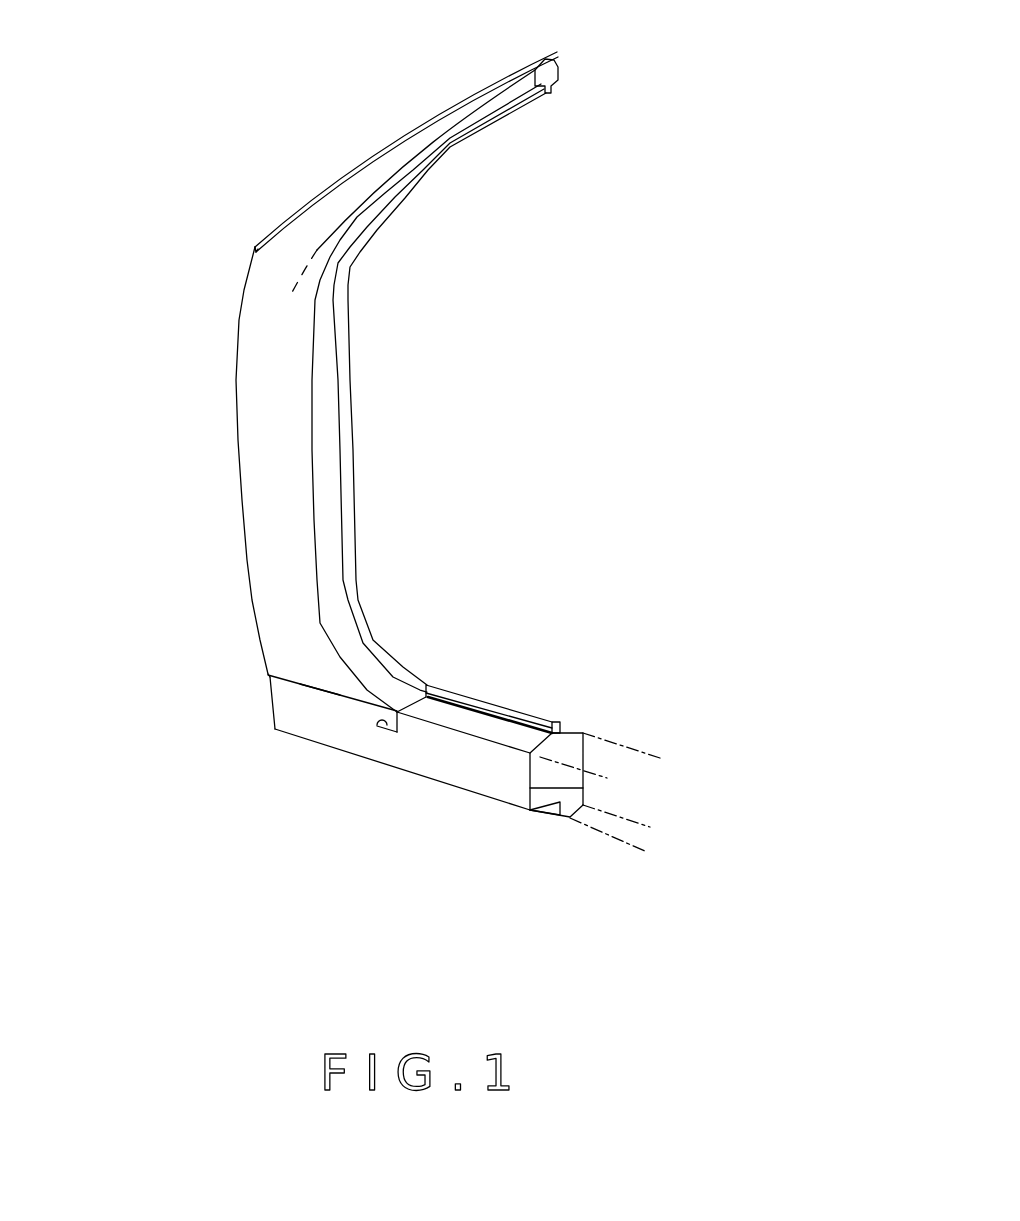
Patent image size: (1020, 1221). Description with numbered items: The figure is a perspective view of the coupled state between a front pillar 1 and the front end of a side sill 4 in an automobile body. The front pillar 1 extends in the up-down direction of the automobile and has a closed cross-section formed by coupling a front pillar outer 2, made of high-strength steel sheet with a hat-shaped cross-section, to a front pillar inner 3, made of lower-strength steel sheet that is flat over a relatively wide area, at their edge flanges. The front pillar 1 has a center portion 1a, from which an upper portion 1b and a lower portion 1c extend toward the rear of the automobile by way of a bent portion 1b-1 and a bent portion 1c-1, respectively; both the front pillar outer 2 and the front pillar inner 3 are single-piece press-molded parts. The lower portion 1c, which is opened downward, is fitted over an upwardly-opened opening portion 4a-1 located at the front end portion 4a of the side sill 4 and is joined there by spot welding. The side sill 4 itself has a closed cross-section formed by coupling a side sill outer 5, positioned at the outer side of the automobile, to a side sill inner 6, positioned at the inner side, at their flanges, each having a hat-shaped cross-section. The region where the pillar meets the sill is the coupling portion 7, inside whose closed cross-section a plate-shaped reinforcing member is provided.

The front pillar 1 is at (366, 396).
The center portion 1a is at (236, 437).
The upper portion 1b is at (400, 136).
The bent portion 1b-1 is at (255, 248).
The lower portion 1c is at (307, 684).
The bent portion 1c-1 is at (268, 674).
The front pillar outer 2 is at (487, 106).
The front pillar inner 3 is at (558, 74).
The side sill 4 is at (490, 805).
The front end portion 4a is at (343, 748).
The opening portion 4a-1 is at (388, 730).
The side sill outer 5 is at (495, 787).
The side sill inner 6 is at (583, 788).
The coupling portion 7 is at (331, 710).